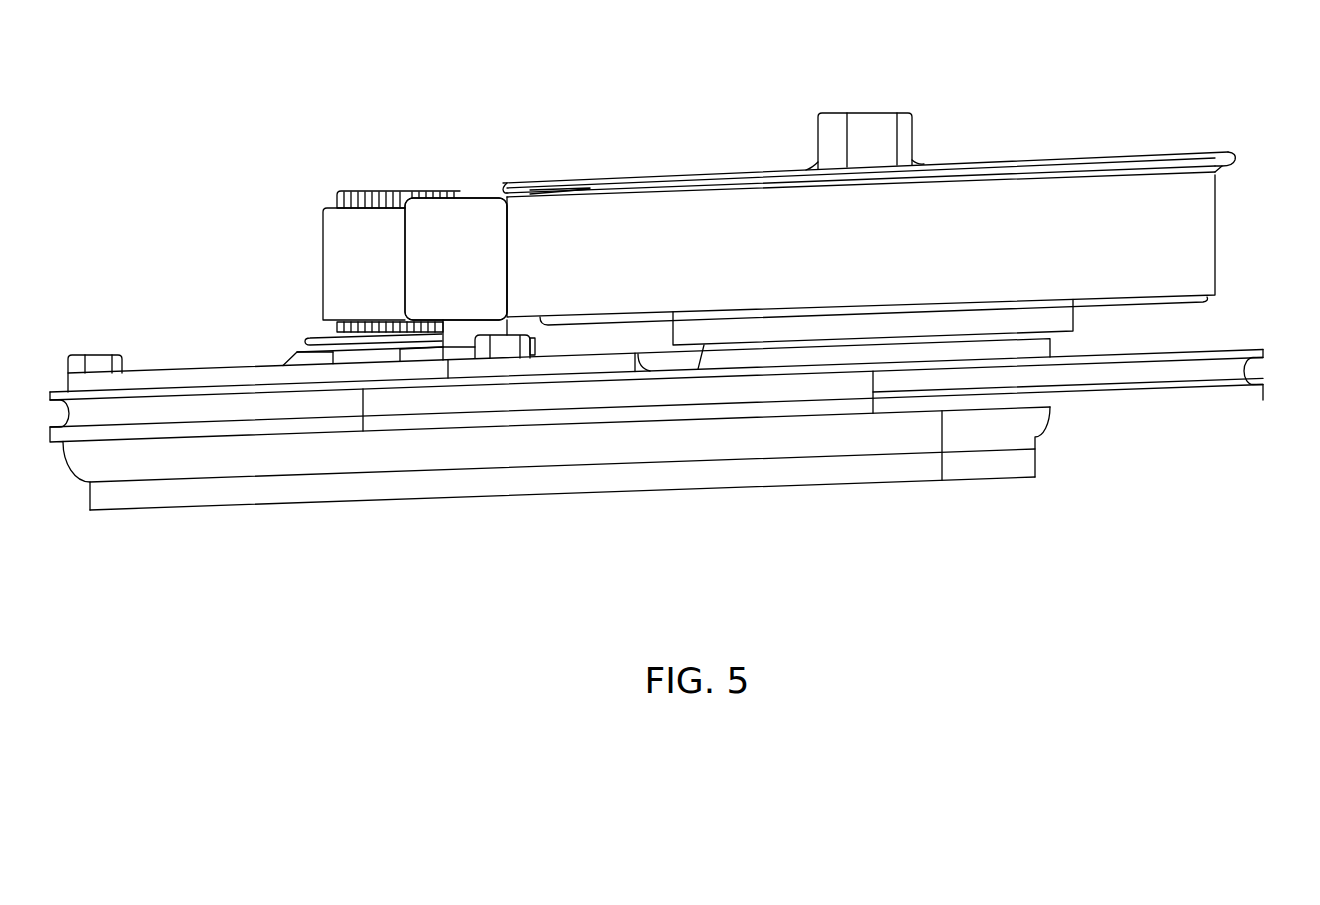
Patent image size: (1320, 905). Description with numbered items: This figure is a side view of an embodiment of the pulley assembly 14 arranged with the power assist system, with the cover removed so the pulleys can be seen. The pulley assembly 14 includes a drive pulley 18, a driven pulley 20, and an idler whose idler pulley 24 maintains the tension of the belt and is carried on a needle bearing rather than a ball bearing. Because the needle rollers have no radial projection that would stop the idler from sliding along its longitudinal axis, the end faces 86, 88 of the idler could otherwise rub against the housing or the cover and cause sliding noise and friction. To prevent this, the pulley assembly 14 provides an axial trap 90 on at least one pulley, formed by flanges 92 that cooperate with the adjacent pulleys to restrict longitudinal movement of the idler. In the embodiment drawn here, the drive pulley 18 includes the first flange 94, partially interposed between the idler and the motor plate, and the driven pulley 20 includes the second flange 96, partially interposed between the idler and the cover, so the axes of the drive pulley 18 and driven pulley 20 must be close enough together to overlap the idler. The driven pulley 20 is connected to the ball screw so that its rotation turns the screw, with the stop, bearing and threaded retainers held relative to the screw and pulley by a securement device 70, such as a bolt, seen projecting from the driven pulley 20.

The pulley assembly 14 is at (1242, 119).
The drive pulley 18 is at (347, 199).
The driven pulley 20 is at (1045, 155).
The idler pulley 24 is at (453, 228).
The securement device 70 is at (858, 122).
The end face 86 is at (523, 352).
The end face 88 is at (482, 199).
The axial trap 90 is at (505, 186).
The flanges 92 is at (307, 340).
The first flange 94 is at (330, 345).
The second flange 96 is at (1226, 170).